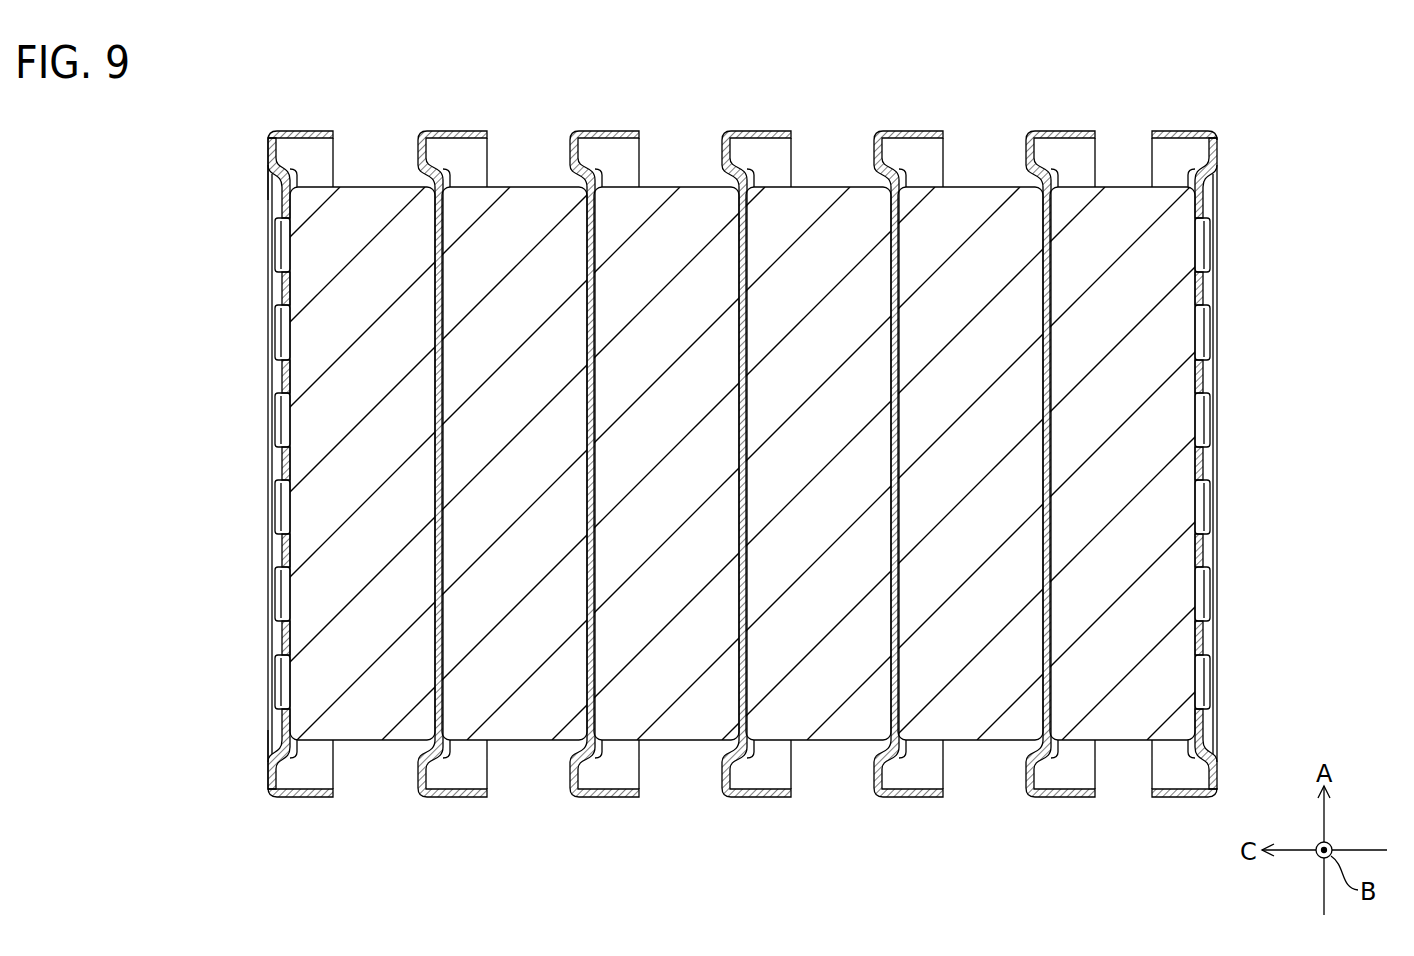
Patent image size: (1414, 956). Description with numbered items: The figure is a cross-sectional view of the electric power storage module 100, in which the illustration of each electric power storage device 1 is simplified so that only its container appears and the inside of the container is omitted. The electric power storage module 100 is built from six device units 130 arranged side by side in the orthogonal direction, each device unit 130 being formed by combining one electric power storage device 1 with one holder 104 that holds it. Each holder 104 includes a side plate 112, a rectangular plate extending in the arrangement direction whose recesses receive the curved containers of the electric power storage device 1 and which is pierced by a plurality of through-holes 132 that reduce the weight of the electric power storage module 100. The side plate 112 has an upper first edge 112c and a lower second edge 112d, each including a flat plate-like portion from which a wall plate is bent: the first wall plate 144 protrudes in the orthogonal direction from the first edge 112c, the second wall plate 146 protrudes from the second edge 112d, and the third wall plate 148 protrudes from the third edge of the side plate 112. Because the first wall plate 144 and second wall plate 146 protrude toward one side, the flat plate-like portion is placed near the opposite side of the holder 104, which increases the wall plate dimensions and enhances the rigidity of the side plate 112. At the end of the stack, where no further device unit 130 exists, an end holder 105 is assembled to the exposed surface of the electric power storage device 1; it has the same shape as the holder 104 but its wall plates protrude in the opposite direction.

The electric power storage module 100 is at (762, 912).
The electric power storage device 1 is at (1117, 186).
The holder 104 is at (1063, 130).
The end holder 105 is at (1213, 137).
The side plate 112 is at (262, 639).
The first edge 112c is at (268, 151).
The second edge 112d is at (268, 777).
The device unit 130 is at (1158, 85).
The through-hole 132 is at (274, 424).
The first wall plate 144 is at (313, 130).
The second wall plate 146 is at (318, 798).
The third wall plate 148 is at (326, 165).